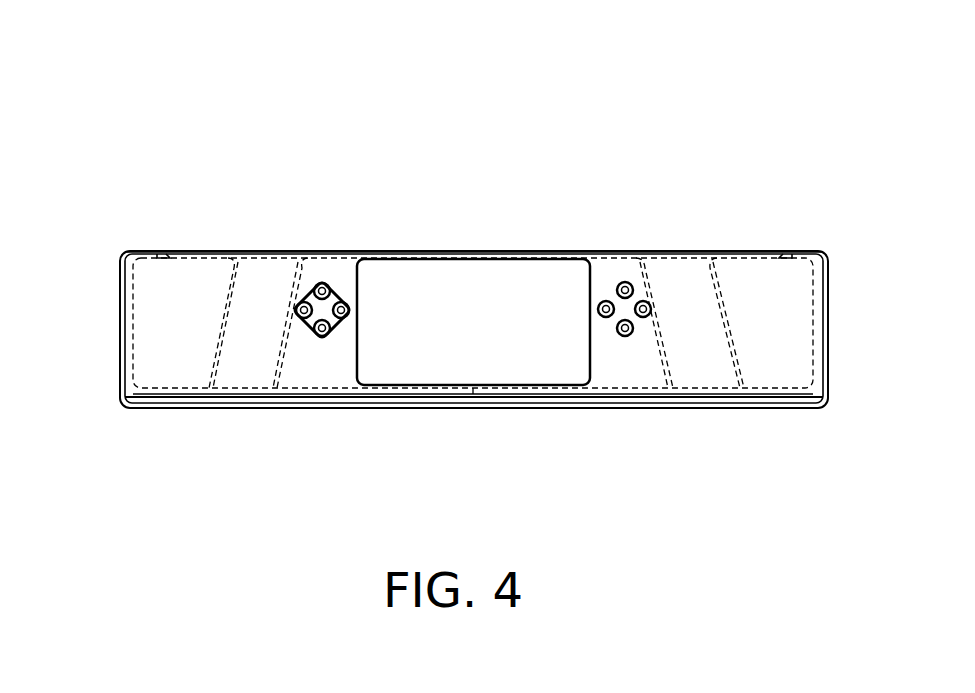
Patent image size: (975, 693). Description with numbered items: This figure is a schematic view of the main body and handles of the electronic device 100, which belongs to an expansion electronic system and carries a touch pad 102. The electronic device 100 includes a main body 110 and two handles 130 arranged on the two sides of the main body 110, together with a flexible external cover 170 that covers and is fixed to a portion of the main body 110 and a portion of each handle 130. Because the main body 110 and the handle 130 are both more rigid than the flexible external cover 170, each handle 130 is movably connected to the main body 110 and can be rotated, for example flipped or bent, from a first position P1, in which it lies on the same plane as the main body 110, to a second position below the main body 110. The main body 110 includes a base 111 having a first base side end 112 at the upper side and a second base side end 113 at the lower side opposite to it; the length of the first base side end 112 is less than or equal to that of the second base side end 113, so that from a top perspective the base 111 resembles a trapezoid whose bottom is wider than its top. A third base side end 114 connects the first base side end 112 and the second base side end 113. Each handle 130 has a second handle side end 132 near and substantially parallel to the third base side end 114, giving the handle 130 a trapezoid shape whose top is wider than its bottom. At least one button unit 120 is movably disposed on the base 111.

The electronic device 100 is at (148, 63).
The main body 110 is at (814, 37).
The base 111 is at (610, 378).
The first base side end 112 is at (537, 256).
The second base side end 113 is at (423, 395).
The third base side end 114 is at (283, 352).
The button unit 120 is at (331, 288).
The touch pad 102 is at (473, 287).
The handle 130 is at (200, 330).
The second handle side end 132 is at (225, 348).
The flexible external cover 170 is at (263, 288).
The first position P1 is at (870, 525).